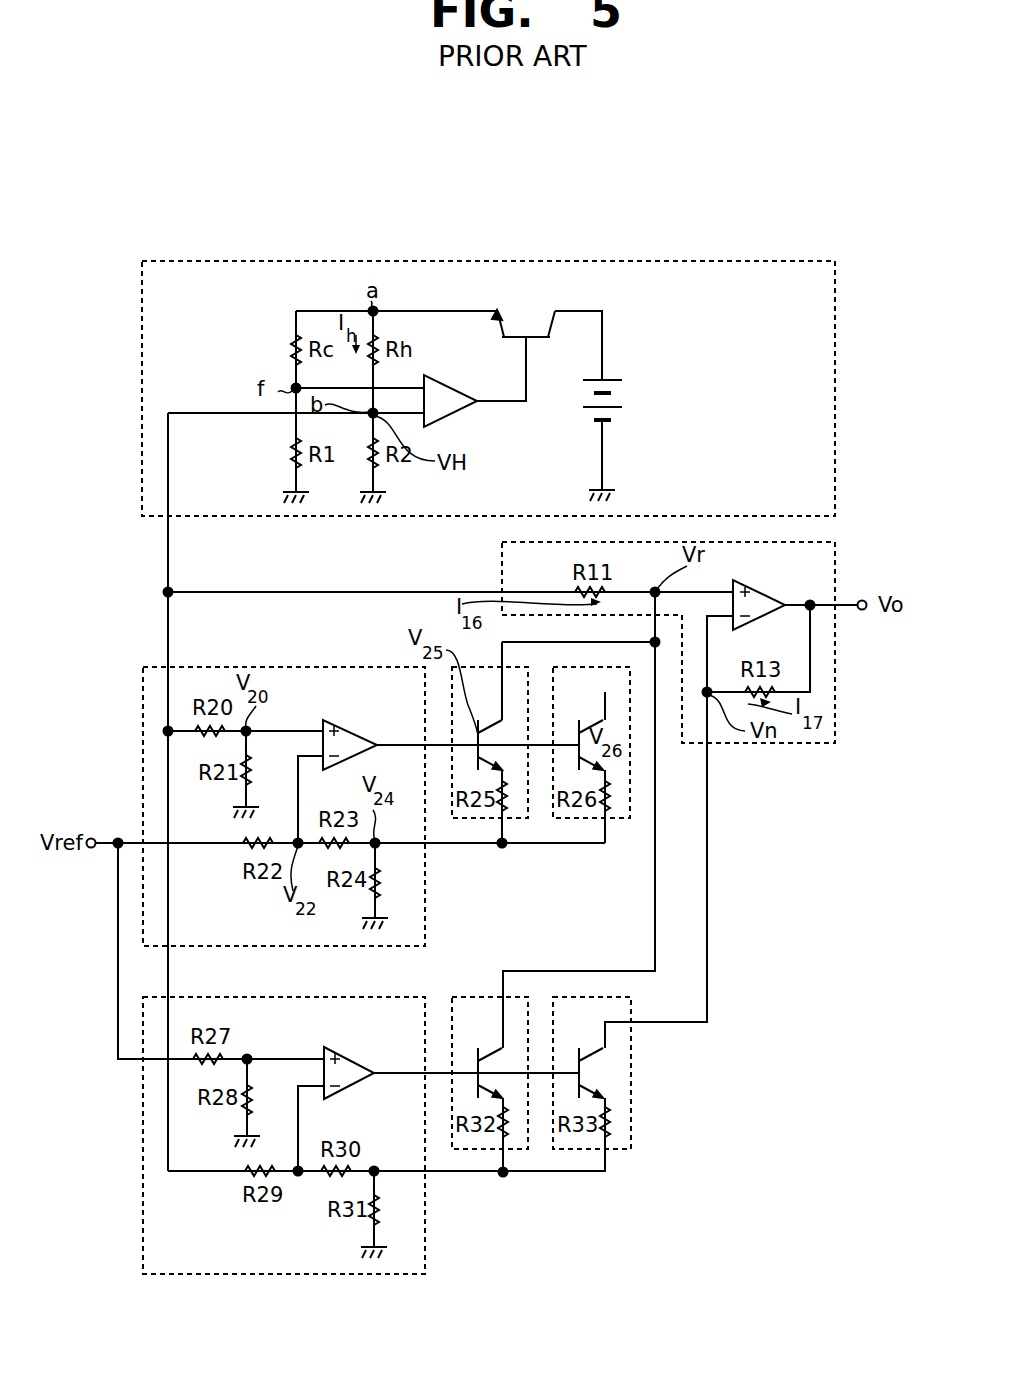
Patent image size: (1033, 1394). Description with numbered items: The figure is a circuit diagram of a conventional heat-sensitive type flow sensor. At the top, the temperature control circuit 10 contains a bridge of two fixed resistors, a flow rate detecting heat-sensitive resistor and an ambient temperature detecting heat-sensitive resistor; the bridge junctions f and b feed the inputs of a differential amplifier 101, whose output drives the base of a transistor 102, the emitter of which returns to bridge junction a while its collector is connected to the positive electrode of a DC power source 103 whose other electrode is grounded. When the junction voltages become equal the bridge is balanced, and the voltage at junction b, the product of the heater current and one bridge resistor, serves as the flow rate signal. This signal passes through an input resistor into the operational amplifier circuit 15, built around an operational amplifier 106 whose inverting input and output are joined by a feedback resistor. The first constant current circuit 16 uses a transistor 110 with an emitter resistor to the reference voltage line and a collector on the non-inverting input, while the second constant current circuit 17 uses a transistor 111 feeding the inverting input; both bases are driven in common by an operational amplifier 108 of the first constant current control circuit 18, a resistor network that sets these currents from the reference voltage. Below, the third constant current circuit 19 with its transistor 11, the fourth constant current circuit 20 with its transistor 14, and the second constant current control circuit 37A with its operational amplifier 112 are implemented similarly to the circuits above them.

The temperature control circuit 10 is at (680, 261).
The differential amplifier 101 is at (448, 378).
The transistor 102 is at (525, 319).
The DC power source 103 is at (620, 402).
The operational amplifier 106 is at (758, 584).
The operational amplifier 108 is at (349, 728).
The transistor 110 is at (490, 722).
The transistor 111 is at (590, 722).
The operational amplifier 112 is at (349, 1058).
The transistor 11 is at (490, 1052).
The transistor 14 is at (590, 1052).
The operational amplifier circuit 15 is at (785, 770).
The first constant current circuit 16 is at (480, 856).
The second constant current circuit 17 is at (584, 856).
The first constant current control circuit 18 is at (455, 922).
The third constant current circuit 19 is at (480, 1187).
The fourth constant current circuit 20 is at (584, 1187).
The second constant current control circuit 37A is at (455, 1254).